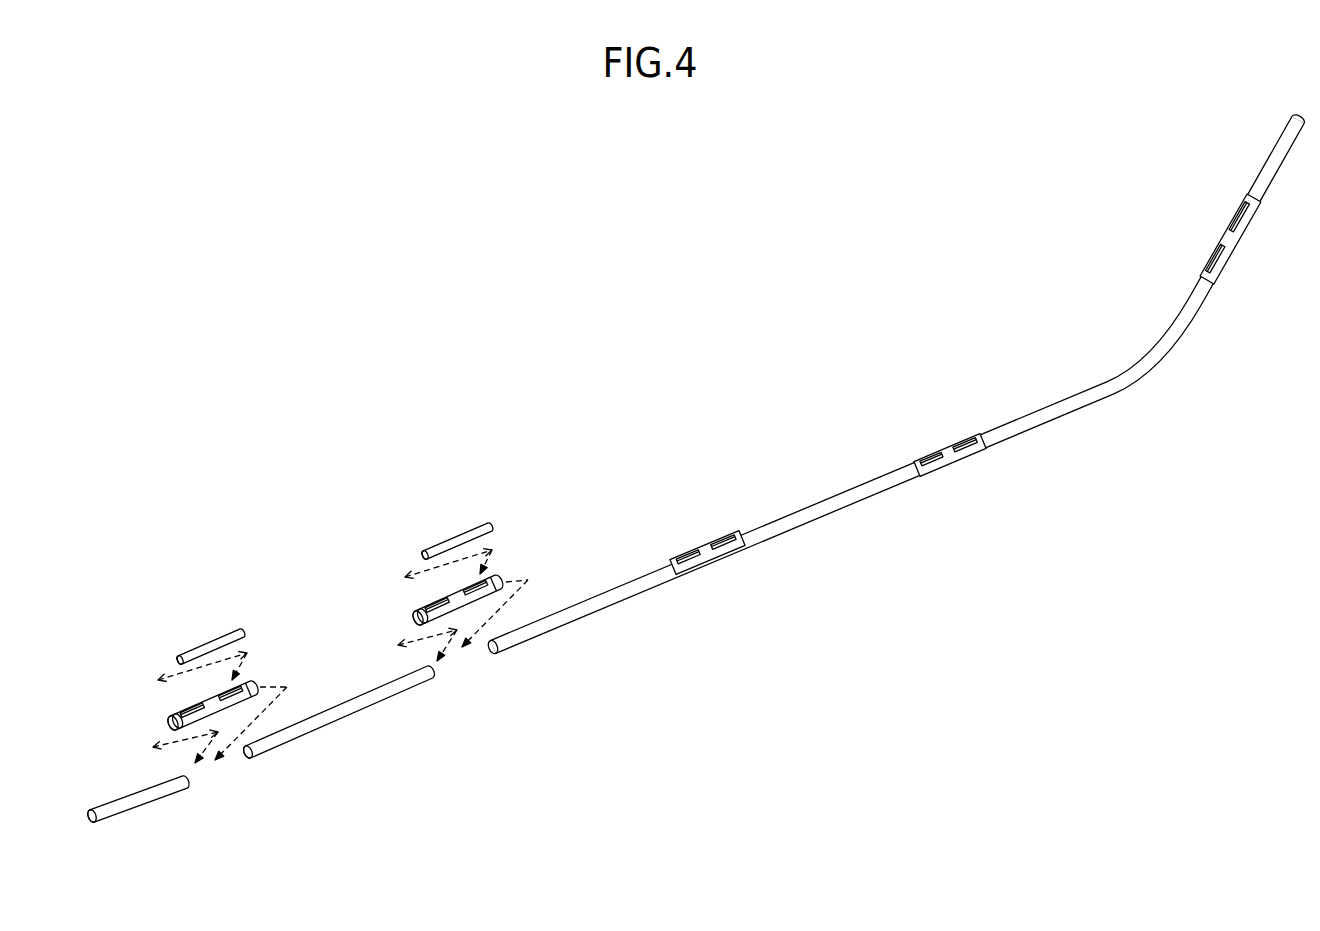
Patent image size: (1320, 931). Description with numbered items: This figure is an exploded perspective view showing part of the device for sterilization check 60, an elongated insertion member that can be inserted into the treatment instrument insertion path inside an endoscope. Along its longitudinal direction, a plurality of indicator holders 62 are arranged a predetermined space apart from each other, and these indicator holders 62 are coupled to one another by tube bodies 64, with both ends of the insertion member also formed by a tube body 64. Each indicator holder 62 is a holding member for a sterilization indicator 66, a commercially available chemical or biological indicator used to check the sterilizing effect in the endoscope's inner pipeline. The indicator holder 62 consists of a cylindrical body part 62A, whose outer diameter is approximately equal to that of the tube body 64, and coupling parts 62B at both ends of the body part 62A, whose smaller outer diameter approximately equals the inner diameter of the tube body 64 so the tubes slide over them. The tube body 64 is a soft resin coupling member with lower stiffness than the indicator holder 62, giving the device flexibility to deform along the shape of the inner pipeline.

The device for sterilization check 60 is at (1032, 380).
The indicator holder 62 is at (392, 626).
The body part 62A is at (463, 603).
The coupling part 62B is at (422, 610).
The tube body 64 is at (122, 800).
The sterilization indicator 66 is at (453, 540).